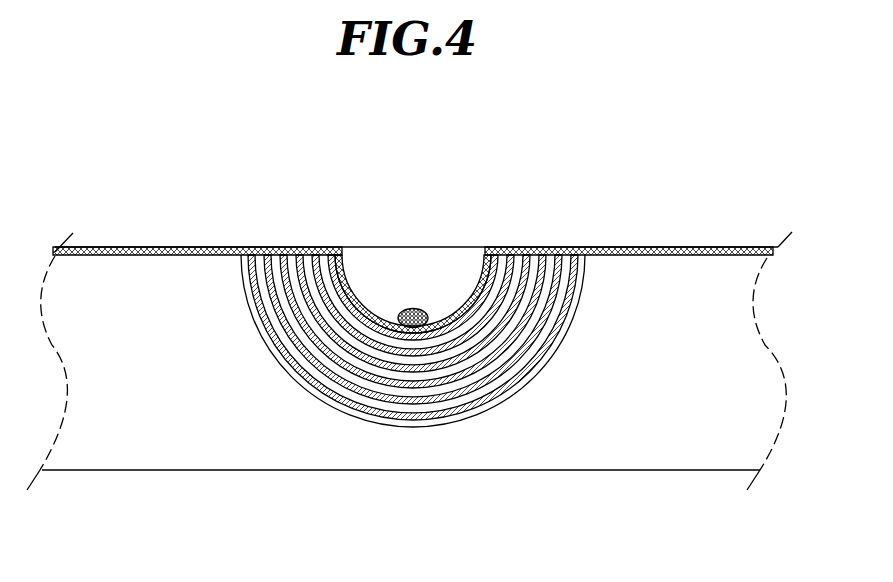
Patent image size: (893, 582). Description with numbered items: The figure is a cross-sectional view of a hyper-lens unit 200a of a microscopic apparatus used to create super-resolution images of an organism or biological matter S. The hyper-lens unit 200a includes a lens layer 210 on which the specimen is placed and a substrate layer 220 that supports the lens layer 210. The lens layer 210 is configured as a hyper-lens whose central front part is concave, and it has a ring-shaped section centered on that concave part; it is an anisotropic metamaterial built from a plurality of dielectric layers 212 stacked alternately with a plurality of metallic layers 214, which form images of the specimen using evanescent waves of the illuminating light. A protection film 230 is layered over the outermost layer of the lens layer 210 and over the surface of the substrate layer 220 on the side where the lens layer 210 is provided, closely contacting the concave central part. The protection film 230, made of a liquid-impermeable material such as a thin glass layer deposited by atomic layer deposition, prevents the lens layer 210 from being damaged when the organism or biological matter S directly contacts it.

The hyper-lens unit 200a is at (463, 129).
The lens layer 210 is at (462, 424).
The dielectric layers 212 is at (533, 266).
The metallic layers 214 is at (540, 256).
The substrate layer 220 is at (647, 277).
The protection film 230 is at (351, 271).
The organism or biological matter S is at (427, 310).